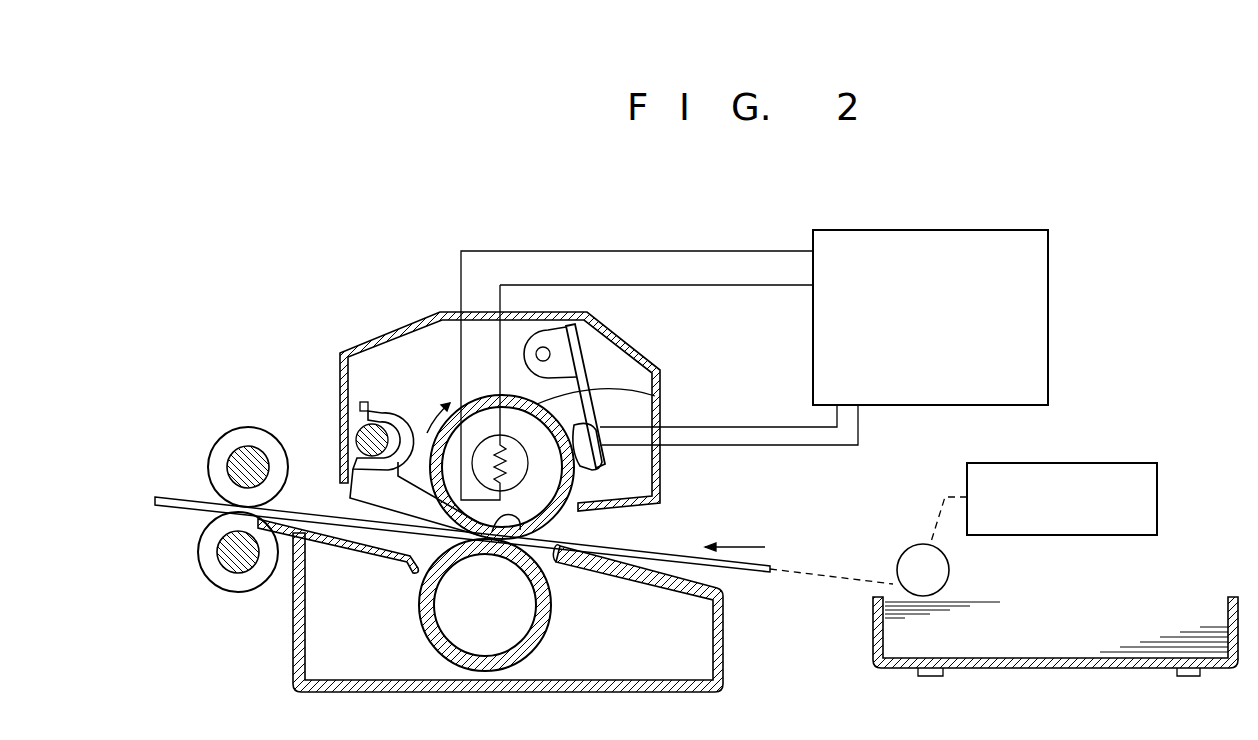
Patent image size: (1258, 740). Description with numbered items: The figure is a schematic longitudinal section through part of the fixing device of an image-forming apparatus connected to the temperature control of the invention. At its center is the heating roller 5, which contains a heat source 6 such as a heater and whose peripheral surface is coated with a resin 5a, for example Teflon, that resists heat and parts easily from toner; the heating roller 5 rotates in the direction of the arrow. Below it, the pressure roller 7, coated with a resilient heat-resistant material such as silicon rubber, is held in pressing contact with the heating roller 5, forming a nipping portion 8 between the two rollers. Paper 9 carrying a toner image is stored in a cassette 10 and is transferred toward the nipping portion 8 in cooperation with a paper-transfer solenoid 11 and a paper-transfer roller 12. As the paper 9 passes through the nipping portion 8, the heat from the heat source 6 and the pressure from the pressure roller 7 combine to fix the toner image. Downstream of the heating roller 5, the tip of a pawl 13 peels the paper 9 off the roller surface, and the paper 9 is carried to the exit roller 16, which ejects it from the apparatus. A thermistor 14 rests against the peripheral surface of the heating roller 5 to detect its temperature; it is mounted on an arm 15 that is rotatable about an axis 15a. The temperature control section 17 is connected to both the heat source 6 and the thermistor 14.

The heating roller 5 is at (522, 425).
The resin 5a is at (578, 488).
The heat source 6 is at (522, 474).
The pressure roller 7 is at (548, 628).
The nipping portion 8 is at (540, 522).
The paper 9 is at (762, 574).
The cassette 10 is at (1120, 670).
The paper-transfer solenoid 11 is at (1112, 463).
The paper-transfer roller 12 is at (905, 552).
The pawl 13 is at (405, 490).
The thermistor 14 is at (592, 432).
The arm 15 is at (577, 378).
The axis 15a is at (543, 347).
The exit roller 16 is at (208, 458).
The temperature control section 17 is at (990, 230).